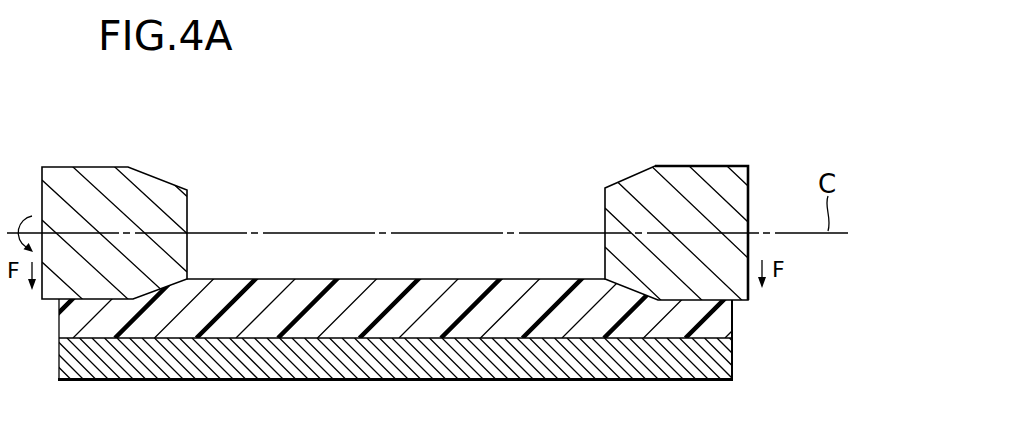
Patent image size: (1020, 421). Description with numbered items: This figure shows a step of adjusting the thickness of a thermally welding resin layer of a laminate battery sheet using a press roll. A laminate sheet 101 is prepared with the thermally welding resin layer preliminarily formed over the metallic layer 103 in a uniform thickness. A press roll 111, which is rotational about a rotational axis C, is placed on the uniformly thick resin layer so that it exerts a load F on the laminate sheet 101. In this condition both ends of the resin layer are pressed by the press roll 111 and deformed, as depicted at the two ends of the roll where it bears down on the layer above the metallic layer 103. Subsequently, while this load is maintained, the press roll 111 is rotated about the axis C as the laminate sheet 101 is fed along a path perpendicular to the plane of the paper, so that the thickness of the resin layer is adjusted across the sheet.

The press roll 111 is at (102, 167).
The laminate sheet 101 is at (442, 320).
The metallic layer 103 is at (735, 358).